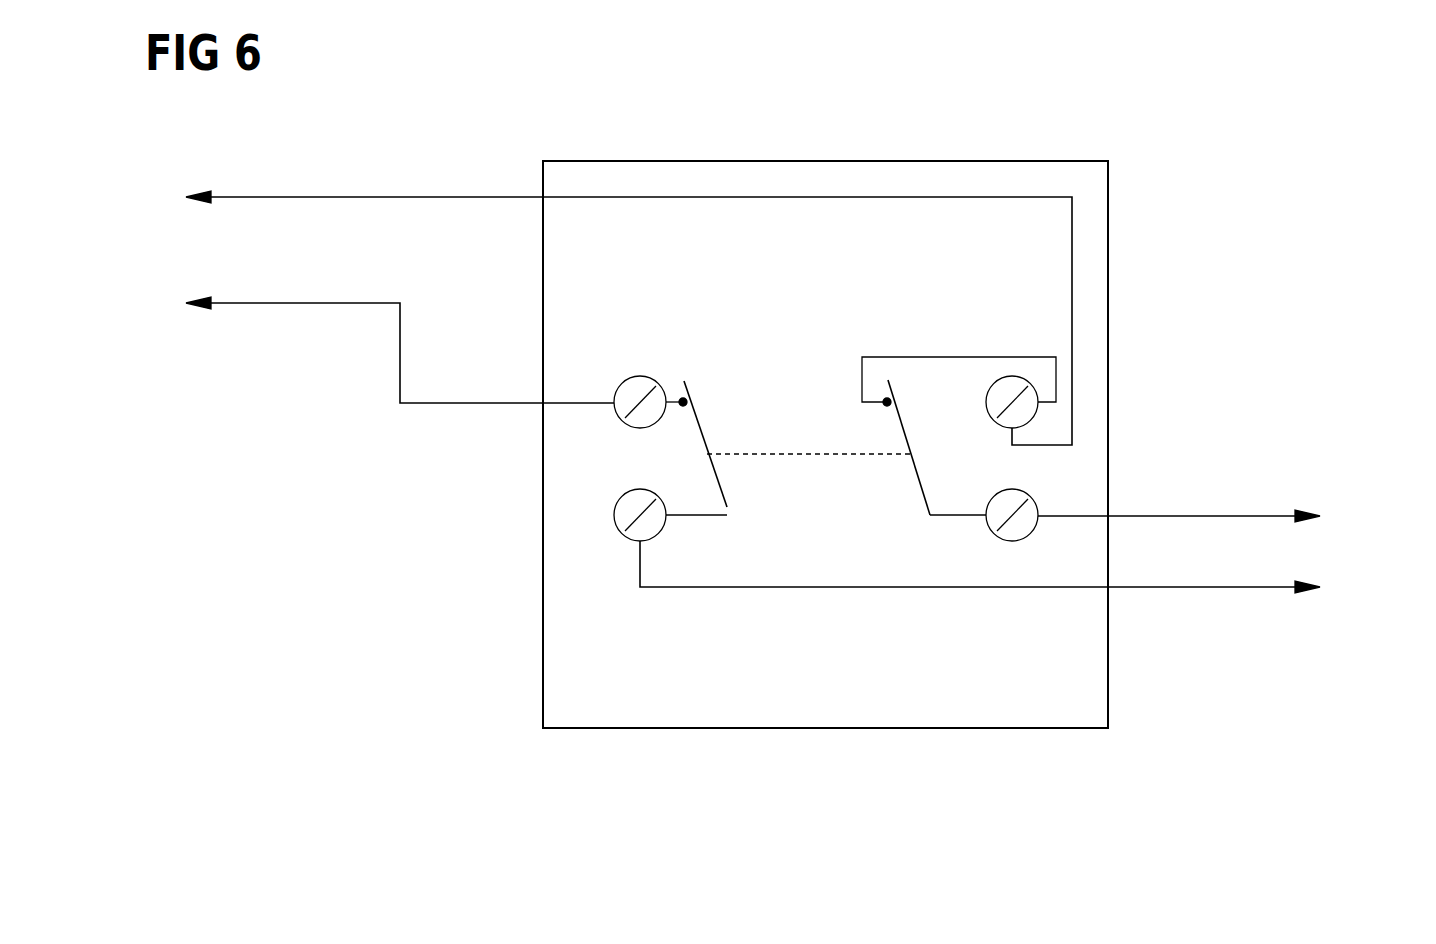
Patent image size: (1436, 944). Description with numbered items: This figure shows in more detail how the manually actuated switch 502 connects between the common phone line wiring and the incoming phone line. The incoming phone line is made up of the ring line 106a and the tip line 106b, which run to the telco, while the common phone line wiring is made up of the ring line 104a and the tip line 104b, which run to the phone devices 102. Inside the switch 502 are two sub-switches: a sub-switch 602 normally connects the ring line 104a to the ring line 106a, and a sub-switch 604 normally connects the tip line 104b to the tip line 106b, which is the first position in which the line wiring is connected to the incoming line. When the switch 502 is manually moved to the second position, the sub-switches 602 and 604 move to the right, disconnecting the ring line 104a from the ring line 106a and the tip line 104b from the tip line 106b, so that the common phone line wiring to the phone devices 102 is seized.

The manually actuated switch 502 is at (843, 307).
The ring line of the incoming phone line 106a is at (402, 197).
The tip line of the incoming phone line 106b is at (320, 305).
The ring line of the common phone line wiring 104a is at (1220, 517).
The tip line of the common phone line wiring 104b is at (1237, 587).
The sub-switch 602 is at (925, 514).
The sub-switch 604 is at (731, 509).
The phone devices 102 is at (1268, 552).